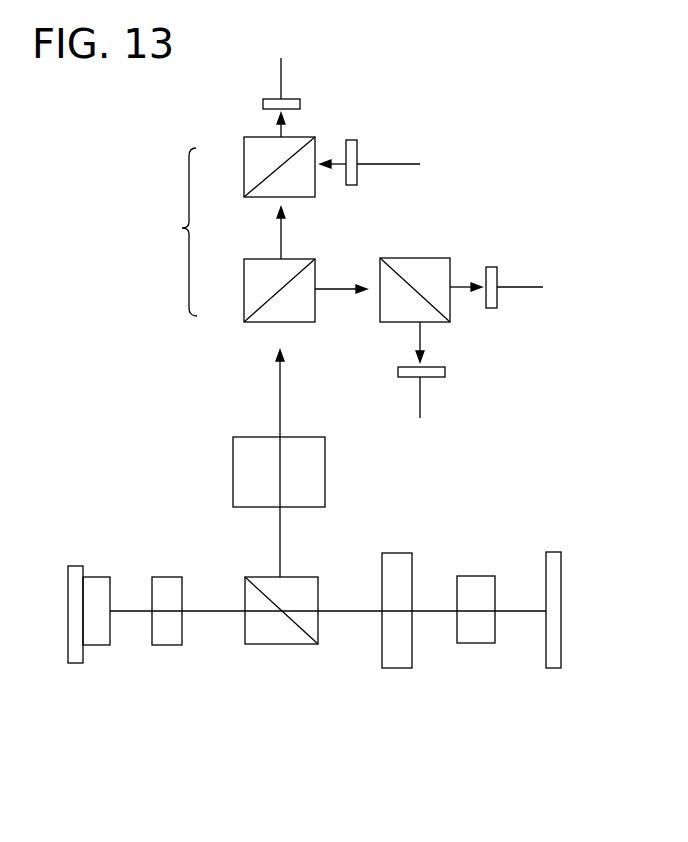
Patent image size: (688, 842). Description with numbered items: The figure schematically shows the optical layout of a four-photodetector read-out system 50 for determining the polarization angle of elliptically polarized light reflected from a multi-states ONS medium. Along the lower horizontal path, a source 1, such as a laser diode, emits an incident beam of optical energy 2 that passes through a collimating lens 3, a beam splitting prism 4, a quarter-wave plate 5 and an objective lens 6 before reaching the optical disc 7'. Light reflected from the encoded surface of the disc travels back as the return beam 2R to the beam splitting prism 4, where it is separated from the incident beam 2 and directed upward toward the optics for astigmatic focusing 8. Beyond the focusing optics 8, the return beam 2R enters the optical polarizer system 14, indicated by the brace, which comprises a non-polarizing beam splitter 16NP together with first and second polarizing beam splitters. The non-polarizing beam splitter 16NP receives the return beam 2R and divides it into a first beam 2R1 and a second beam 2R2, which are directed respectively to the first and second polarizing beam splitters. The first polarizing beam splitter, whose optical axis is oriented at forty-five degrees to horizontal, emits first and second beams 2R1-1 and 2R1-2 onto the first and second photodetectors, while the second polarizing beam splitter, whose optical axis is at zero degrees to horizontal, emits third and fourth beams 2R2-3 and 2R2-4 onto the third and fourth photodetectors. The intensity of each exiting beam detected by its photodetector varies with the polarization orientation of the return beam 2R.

The source of an incident beam of optical energy 1 is at (100, 648).
The incident beam of optical energy 2 is at (133, 614).
The collimating lens 3 is at (170, 648).
The beam splitting prism 4 is at (268, 648).
The quarter-wave plate 5 is at (396, 671).
The objective lens 6 is at (477, 646).
The optical disc 7' is at (557, 641).
The optics for astigmatic focusing 8 is at (331, 474).
The optical polarizer element or system 14 is at (176, 232).
The 4-photodetector read-out system 50 is at (119, 257).
The return beam 2R is at (284, 400).
The first beam 2R1 is at (333, 298).
The second beam 2R2 is at (285, 228).
The first exiting beam 2R1-1 is at (427, 337).
The second exiting beam 2R1-2 is at (466, 282).
The third exiting beam 2R2-3 is at (289, 122).
The fourth exiting beam 2R2-4 is at (323, 170).
The non-polarizing beam splitter 16NP is at (240, 307).